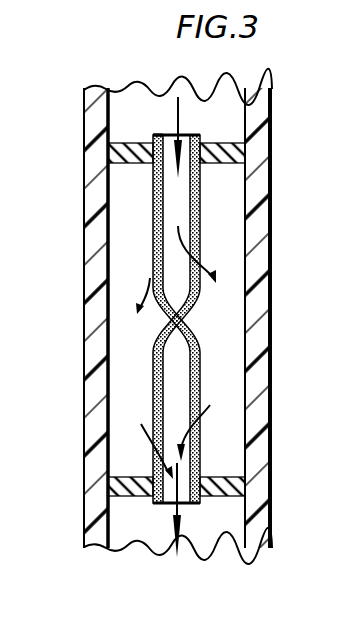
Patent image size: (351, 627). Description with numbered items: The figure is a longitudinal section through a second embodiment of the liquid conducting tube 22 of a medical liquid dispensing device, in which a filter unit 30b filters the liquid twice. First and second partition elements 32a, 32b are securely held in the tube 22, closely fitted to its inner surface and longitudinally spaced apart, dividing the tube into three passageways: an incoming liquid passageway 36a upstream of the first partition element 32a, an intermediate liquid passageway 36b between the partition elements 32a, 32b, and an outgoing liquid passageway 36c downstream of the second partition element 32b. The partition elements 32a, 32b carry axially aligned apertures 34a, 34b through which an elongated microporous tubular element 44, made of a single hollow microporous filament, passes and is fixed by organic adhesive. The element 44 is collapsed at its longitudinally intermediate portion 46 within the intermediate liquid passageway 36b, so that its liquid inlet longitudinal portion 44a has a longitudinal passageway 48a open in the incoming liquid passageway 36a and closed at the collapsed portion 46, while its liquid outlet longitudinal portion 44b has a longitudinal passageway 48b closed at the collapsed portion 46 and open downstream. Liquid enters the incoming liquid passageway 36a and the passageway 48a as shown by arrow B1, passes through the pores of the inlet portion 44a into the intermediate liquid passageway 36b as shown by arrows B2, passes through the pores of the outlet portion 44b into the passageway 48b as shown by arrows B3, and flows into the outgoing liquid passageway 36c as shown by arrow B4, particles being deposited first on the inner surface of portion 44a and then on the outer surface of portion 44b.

The liquid conducting tube 22 is at (275, 243).
The filter unit 30b is at (124, 189).
The first partition element 32a is at (252, 168).
The second partition element 32b is at (238, 458).
The aperture 34a is at (156, 136).
The aperture 34b is at (155, 502).
The incoming liquid passageway 36a is at (228, 105).
The intermediate liquid passageway 36b is at (235, 347).
The outgoing liquid passageway 36c is at (235, 528).
The microporous tubular element 44 is at (167, 112).
The liquid inlet longitudinal portion 44a is at (156, 220).
The liquid outlet longitudinal portion 44b is at (152, 384).
The collapsed intermediate portion 46 is at (160, 322).
The longitudinal passageway 48a is at (177, 203).
The longitudinal passageway 48b is at (178, 350).
The arrow B1 is at (183, 107).
The arrows B2 is at (150, 280).
The arrows B3 is at (142, 439).
The arrow B4 is at (183, 528).